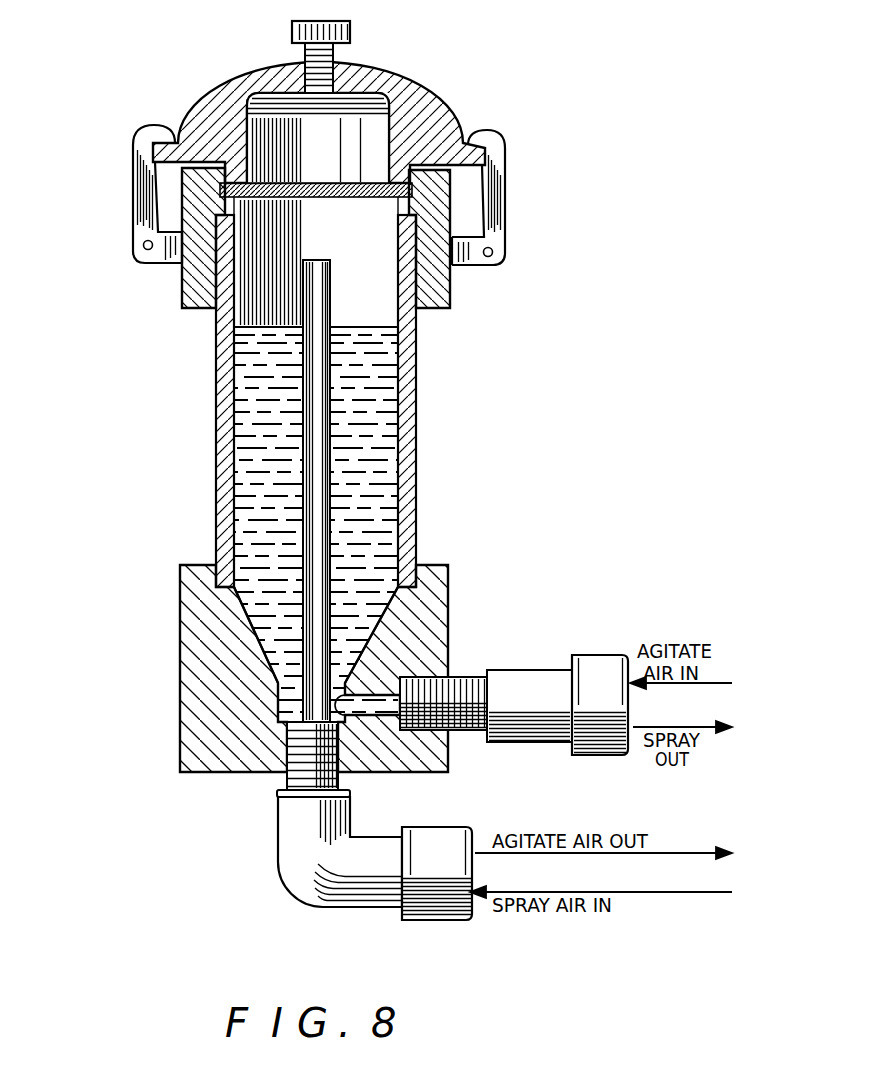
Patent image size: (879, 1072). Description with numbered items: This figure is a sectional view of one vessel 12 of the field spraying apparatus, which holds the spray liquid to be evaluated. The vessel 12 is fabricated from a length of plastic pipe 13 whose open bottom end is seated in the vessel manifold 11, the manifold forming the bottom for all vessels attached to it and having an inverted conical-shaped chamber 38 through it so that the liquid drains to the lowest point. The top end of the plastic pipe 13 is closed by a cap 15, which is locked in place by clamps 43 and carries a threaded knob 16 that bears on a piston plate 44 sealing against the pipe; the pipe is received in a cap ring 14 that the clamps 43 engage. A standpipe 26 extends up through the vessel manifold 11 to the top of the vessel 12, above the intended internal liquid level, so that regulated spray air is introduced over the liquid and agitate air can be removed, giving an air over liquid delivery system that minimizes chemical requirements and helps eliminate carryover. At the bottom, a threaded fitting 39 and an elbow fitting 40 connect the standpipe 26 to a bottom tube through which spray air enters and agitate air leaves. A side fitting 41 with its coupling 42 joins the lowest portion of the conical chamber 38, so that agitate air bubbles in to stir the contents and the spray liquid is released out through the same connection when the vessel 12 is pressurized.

The vessel manifold 11 is at (180, 592).
The vessel 12 is at (197, 397).
The plastic pipe 13 is at (418, 413).
The cap ring 14 is at (452, 293).
The cap 15 is at (233, 75).
The adjusting knob 16 is at (350, 33).
The standpipe 26 is at (313, 487).
The conical passage 38 is at (262, 647).
The threaded fitting 39 is at (288, 748).
The elbow fitting 40 is at (280, 875).
The threaded fitting 41 is at (473, 677).
The coupling 42 is at (532, 678).
The clamp 43 is at (137, 190).
The piston plate 44 is at (387, 190).